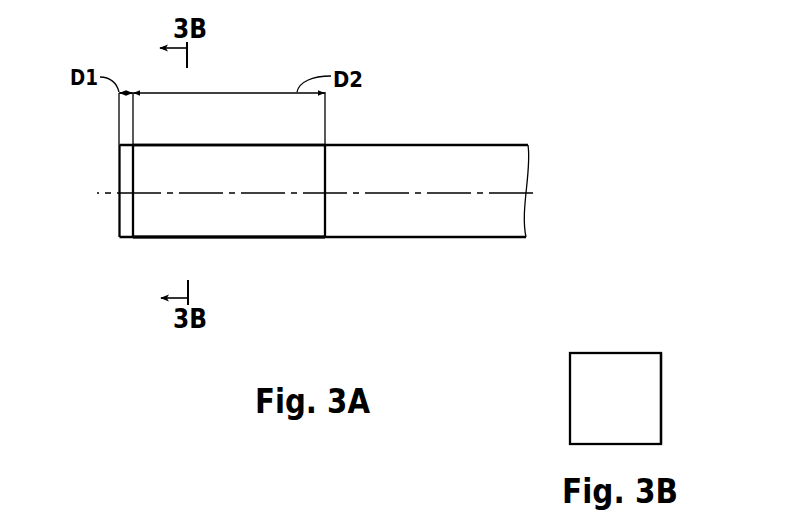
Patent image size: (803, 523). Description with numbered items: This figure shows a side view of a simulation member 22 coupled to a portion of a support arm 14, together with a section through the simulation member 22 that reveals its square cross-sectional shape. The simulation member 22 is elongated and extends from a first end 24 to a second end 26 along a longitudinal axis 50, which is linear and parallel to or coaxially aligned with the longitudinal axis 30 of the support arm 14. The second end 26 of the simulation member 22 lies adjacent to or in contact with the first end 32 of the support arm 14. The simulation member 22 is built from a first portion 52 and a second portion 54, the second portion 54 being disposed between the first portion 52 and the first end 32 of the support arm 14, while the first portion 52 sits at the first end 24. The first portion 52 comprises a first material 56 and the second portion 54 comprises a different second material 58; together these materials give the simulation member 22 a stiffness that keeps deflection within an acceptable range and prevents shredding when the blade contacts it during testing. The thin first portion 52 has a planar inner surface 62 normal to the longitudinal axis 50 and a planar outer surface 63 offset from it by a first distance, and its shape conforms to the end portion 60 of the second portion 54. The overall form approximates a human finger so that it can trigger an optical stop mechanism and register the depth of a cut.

In FIG. 3A, the support arm 14 is at (393, 145).
In FIG. 3A, the simulation member 22 is at (250, 145).
In FIG. 3B, the simulation member 22 is at (627, 360).
In FIG. 3A, the first end 24 is at (116, 242).
In FIG. 3A, the second end 26 is at (313, 241).
In FIG. 3A, the longitudinal axis 30 is at (454, 192).
In FIG. 3A, the first end 32 is at (339, 241).
In FIG. 3A, the longitudinal axis 50 is at (190, 192).
In FIG. 3A, the first portion 52 is at (127, 213).
In FIG. 3A, the second portion 54 is at (232, 239).
In FIG. 3B, the second portion 54 is at (643, 390).
In FIG. 3A, the first material 56 is at (127, 213).
In FIG. 3A, the second material 58 is at (232, 239).
In FIG. 3A, the end portion 60 is at (134, 226).
In FIG. 3A, the inner surface 62 is at (132, 182).
In FIG. 3A, the outer surface 63 is at (119, 152).